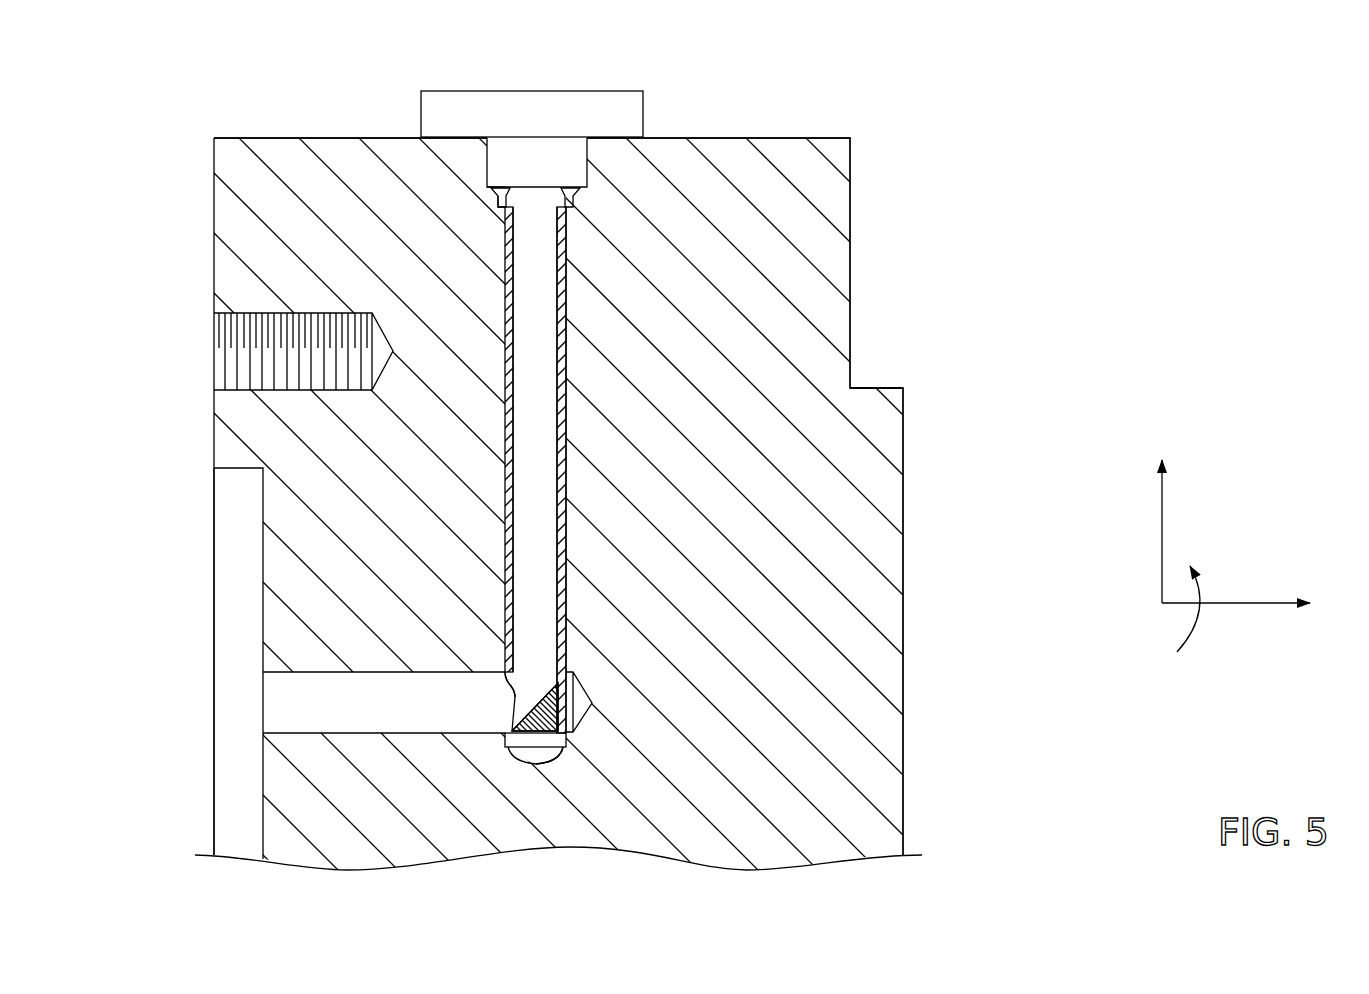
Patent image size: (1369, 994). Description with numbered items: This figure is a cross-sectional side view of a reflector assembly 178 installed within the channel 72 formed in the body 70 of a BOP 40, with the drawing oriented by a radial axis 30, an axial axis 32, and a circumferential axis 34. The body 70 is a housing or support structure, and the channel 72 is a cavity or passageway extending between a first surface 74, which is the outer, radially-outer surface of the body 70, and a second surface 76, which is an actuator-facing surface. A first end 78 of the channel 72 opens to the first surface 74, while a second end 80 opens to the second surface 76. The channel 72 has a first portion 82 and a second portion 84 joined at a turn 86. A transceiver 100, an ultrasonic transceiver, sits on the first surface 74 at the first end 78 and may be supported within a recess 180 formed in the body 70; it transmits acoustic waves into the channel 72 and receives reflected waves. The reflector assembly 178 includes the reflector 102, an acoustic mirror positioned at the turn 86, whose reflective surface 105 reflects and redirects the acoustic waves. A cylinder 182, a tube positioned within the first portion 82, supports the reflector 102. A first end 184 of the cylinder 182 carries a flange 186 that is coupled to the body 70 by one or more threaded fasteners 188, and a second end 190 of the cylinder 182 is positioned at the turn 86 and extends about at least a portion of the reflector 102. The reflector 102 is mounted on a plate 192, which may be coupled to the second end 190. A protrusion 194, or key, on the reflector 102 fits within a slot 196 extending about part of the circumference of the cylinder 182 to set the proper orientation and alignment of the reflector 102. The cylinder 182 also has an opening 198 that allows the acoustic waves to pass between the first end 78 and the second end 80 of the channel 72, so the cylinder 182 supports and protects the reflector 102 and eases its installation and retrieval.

The radial axis 30 is at (1162, 540).
The axial axis 32 is at (1232, 603).
The circumferential axis 34 is at (1200, 618).
The BOP 40 is at (990, 219).
The body 70 is at (724, 157).
The channel 72 is at (580, 288).
The first surface 74 is at (274, 137).
The second surface 76 is at (212, 597).
The first end 78 is at (568, 233).
The second end 80 is at (290, 672).
The first portion 82 is at (582, 481).
The second portion 84 is at (329, 764).
The turn 86 is at (570, 760).
The transceiver 100 is at (606, 91).
The reflector 102 is at (536, 763).
The reflective surface 105 is at (532, 698).
The reflector assembly 178 is at (772, 574).
The recess 180 is at (588, 157).
The cylinder 182 is at (563, 402).
The first end 184 is at (458, 205).
The flange 186 is at (497, 188).
The fasteners 188 is at (497, 205).
The second end 190 is at (596, 746).
The plate 192 is at (515, 752).
The protrusion 194 is at (570, 728).
The slot 196 is at (575, 712).
The opening 198 is at (512, 690).